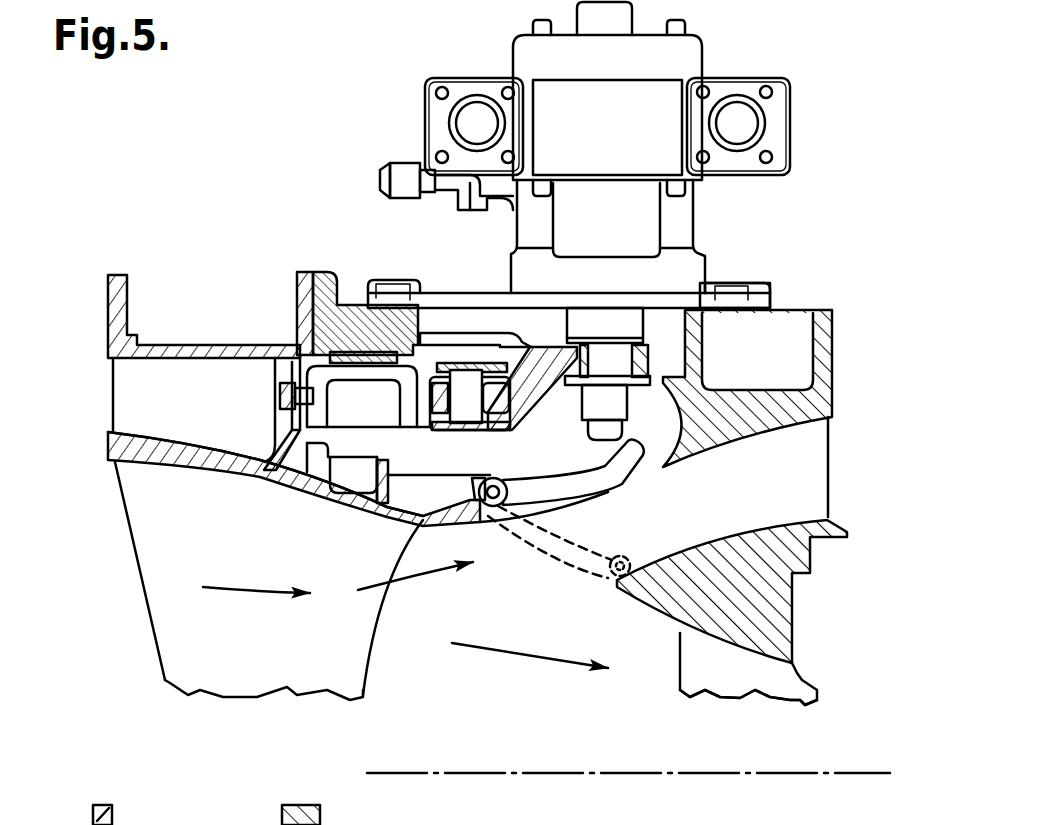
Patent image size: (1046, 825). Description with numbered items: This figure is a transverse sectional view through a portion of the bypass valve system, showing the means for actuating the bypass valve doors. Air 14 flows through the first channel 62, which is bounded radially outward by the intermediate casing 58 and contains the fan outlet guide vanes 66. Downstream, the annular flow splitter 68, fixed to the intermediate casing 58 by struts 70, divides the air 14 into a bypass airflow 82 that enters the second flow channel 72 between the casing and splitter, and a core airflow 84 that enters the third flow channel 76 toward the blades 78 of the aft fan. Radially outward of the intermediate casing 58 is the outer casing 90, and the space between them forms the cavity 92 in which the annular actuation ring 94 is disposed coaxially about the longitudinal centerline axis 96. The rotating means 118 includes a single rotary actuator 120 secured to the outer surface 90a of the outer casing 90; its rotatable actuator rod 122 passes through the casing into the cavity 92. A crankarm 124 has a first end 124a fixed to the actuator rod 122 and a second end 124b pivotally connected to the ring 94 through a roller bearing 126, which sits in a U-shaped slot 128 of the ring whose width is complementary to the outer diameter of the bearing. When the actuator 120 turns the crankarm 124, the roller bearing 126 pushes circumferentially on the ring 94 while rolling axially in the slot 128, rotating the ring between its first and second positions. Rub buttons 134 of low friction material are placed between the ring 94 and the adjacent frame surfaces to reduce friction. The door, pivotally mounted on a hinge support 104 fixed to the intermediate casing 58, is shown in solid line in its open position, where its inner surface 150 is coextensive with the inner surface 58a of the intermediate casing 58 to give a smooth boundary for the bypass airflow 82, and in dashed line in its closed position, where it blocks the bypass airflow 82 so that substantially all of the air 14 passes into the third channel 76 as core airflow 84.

The air 14 is at (244, 590).
The intermediate casing 58 is at (234, 462).
The inner surfaces 58a is at (393, 523).
The first channel 62 is at (427, 632).
The fan outlet guide vanes 66 is at (167, 603).
The annular flow splitter 68 is at (785, 607).
The struts 70 is at (831, 424).
The second flow channel 72 is at (735, 507).
The third flow channel 76 is at (722, 675).
The blades 78 is at (768, 686).
The bypass airflow 82 is at (410, 578).
The core airflow 84 is at (500, 650).
The outer casing 90 is at (309, 268).
The outer surface of the outer casing 90a is at (782, 310).
The cavity 92 is at (556, 484).
The annular actuation ring 94 is at (400, 410).
The longitudinal centerline axis 96 is at (612, 773).
The hinge support 104 is at (410, 478).
The rotating means 118 is at (699, 246).
The rotary actuator 120 is at (727, 71).
The actuator rod 122 is at (620, 374).
The crankarm 124 is at (500, 330).
The crankarm first end 124a is at (670, 330).
The crankarm second end 124b is at (432, 318).
The roller bearing 126 is at (433, 391).
The U-shaped slot 128 is at (427, 439).
The rub buttons 134 is at (340, 336).
The door inner surface 150 is at (517, 596).